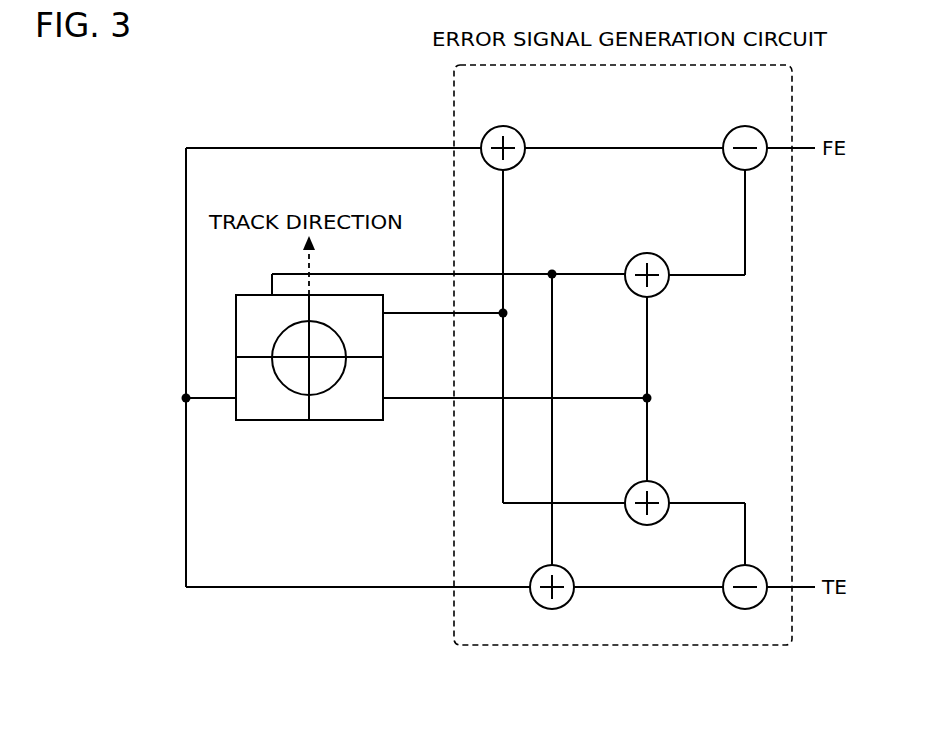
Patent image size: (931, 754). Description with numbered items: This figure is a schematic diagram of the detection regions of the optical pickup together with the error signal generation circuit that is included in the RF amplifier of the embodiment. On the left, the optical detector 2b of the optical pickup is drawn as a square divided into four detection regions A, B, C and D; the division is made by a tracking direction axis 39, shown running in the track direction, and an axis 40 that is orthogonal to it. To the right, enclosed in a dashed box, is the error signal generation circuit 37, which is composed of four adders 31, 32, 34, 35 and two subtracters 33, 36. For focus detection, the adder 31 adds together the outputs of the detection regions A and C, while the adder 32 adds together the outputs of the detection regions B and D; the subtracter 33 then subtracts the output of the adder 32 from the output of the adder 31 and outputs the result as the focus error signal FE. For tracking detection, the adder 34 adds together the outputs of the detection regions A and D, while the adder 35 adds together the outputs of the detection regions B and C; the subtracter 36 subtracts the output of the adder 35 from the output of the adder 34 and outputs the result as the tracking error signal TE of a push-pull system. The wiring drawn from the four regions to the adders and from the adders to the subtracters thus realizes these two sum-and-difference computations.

The optical detector 2b is at (280, 420).
The axis orthogonal to the tracking direction axis 40 is at (253, 357).
The tracking direction axis 39 is at (310, 405).
The adder 31 is at (523, 133).
The adder 32 is at (668, 285).
The subtracter 33 is at (722, 158).
The adder 34 is at (663, 485).
The adder 35 is at (537, 567).
The subtracter 36 is at (723, 577).
The error signal generation circuit 37 is at (615, 645).